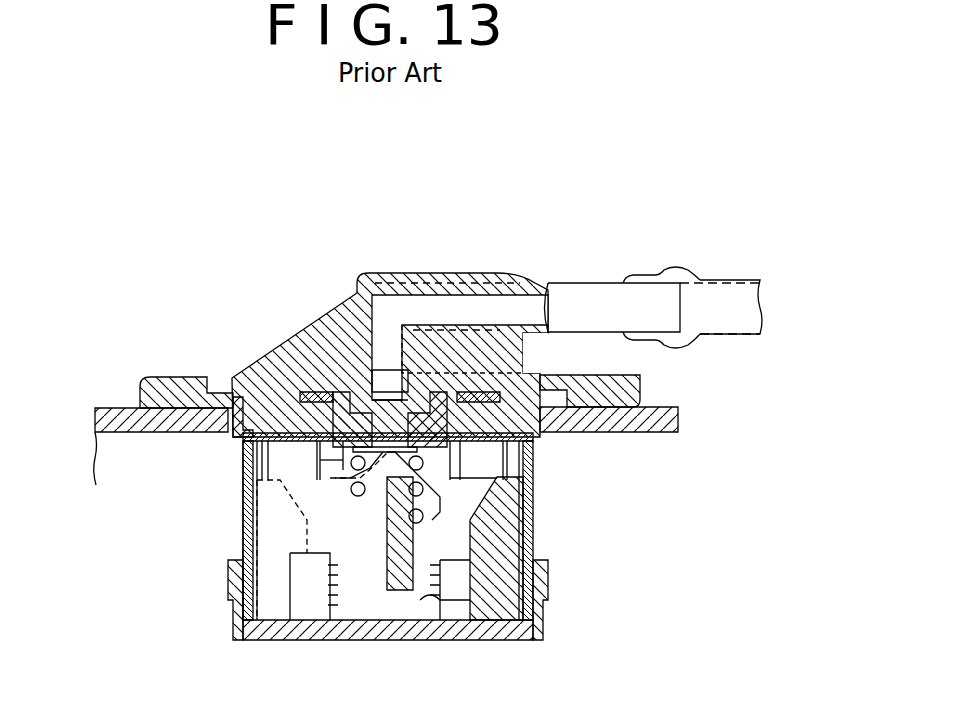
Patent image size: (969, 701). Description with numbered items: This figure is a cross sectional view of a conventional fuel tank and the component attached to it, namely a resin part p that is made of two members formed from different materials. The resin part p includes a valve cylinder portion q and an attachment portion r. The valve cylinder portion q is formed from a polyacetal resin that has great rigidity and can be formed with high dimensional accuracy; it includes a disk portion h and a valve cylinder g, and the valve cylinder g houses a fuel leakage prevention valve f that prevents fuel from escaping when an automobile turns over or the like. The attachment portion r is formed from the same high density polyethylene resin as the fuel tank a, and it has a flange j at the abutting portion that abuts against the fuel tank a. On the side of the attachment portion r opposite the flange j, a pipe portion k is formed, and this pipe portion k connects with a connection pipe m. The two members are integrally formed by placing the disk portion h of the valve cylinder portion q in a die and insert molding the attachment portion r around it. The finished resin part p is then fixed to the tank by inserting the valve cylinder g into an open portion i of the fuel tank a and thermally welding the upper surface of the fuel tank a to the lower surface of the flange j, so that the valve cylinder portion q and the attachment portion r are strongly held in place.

The fuel tank a is at (680, 412).
The fuel leakage prevention valve f is at (535, 548).
The valve cylinder g is at (535, 500).
The disk portion h is at (327, 390).
The open portion i is at (237, 443).
The flange j is at (142, 392).
The pipe portion k is at (562, 292).
The connection pipe m is at (720, 293).
The resin part p is at (578, 625).
The valve cylinder portion q is at (243, 537).
The attachment portion r is at (268, 368).